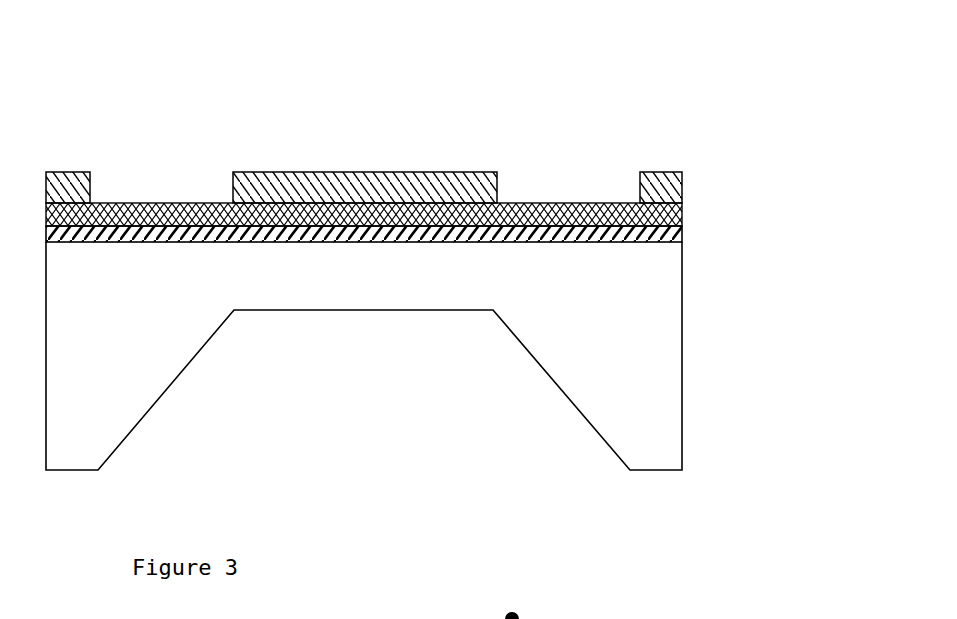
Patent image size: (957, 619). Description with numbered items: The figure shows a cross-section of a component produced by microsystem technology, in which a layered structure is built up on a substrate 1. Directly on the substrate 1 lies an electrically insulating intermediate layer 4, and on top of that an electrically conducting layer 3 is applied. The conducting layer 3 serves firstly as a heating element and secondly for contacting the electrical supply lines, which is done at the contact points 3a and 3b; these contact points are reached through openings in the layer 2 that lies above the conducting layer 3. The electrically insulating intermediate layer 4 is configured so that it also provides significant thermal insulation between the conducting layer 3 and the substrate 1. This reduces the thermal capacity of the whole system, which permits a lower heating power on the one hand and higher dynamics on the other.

The substrate 1 is at (627, 415).
The layer 2 is at (377, 193).
The electrically conducting layer 3 is at (682, 212).
The contact point 3a is at (124, 203).
The contact point 3b is at (563, 202).
The electrically insulating intermediate layer 4 is at (682, 241).